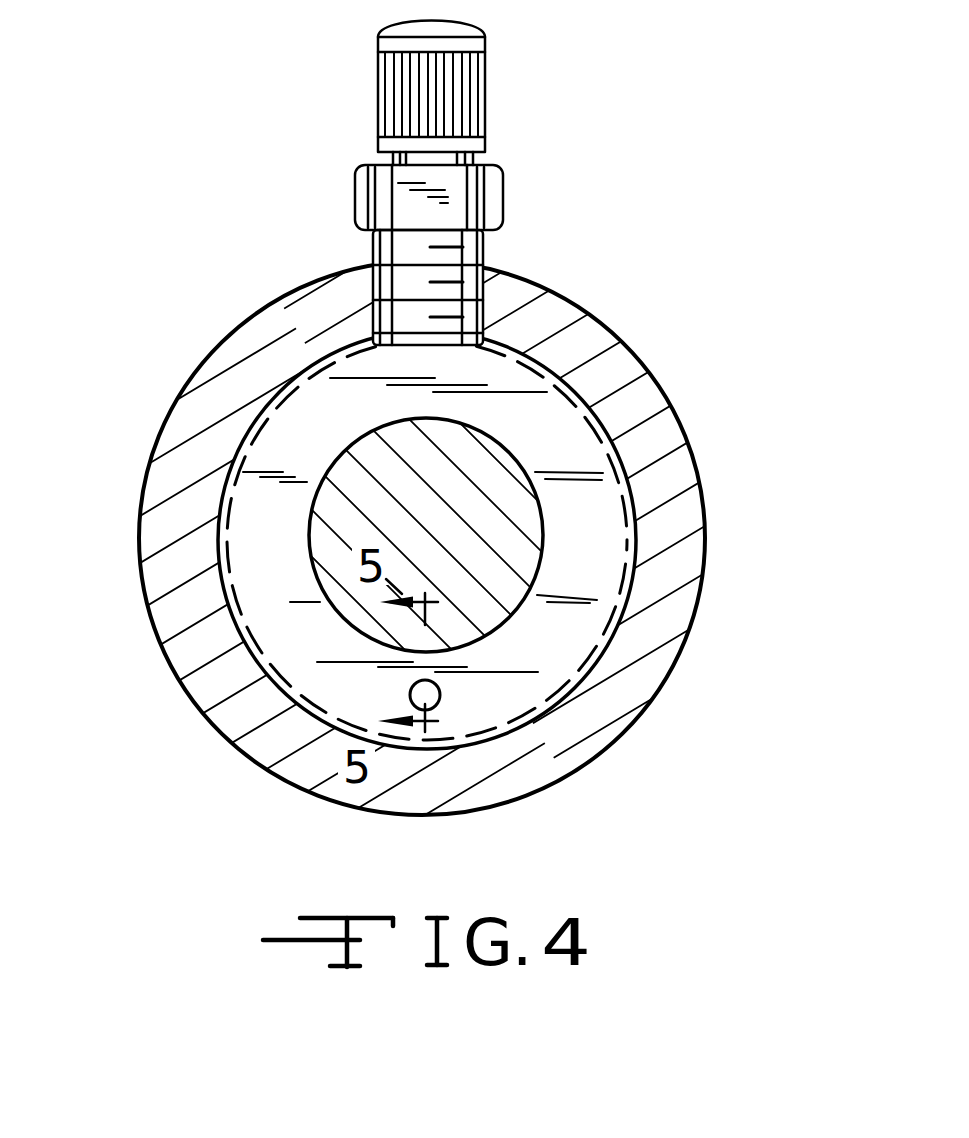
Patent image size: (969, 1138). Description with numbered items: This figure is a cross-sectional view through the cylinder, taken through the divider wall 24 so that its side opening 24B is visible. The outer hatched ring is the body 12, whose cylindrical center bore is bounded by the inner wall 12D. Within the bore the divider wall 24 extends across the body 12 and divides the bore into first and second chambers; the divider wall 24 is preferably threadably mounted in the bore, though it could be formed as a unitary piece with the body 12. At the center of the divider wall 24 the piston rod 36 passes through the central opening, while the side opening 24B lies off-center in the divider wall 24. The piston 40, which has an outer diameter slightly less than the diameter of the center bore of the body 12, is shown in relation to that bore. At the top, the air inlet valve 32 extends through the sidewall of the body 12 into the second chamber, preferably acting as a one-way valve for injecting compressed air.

The body 12 is at (693, 552).
The inner wall 12D is at (242, 591).
The divider wall 24 is at (602, 500).
The side opening 24B is at (440, 697).
The air inlet valve 32 is at (487, 73).
The piston rod 36 is at (520, 552).
The piston 40 is at (658, 350).